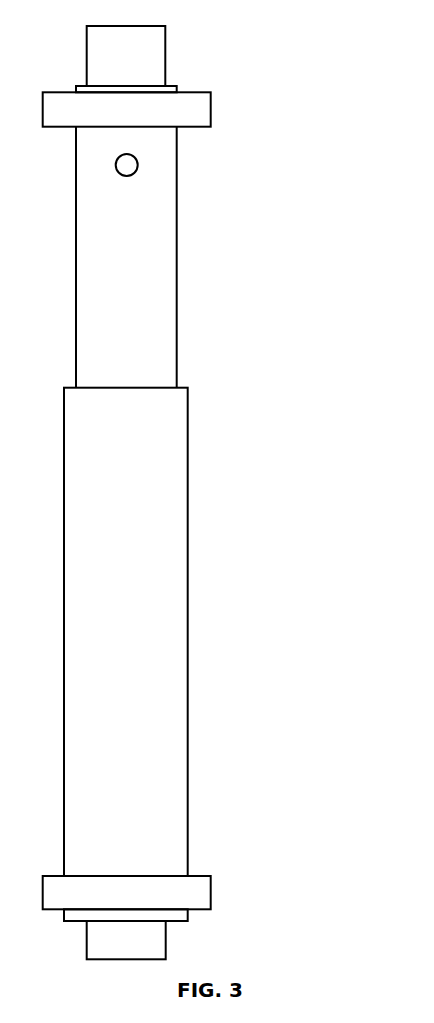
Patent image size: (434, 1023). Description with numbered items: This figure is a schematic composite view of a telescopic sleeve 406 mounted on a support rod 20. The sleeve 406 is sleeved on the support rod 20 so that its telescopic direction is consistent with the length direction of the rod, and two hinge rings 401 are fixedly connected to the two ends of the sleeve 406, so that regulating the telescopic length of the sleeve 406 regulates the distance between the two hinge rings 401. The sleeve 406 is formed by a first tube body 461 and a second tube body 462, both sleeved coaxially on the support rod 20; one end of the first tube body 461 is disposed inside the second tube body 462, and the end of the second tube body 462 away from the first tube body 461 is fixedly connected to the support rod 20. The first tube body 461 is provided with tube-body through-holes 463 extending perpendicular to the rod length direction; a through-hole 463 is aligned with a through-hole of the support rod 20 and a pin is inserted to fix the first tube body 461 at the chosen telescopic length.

The support rod 20 is at (132, 53).
The hinge ring 401 is at (163, 110).
The telescopic sleeve 406 is at (218, 501).
The first tube body 461 is at (142, 332).
The second tube body 462 is at (183, 632).
The tube-body through-hole 463 is at (138, 167).